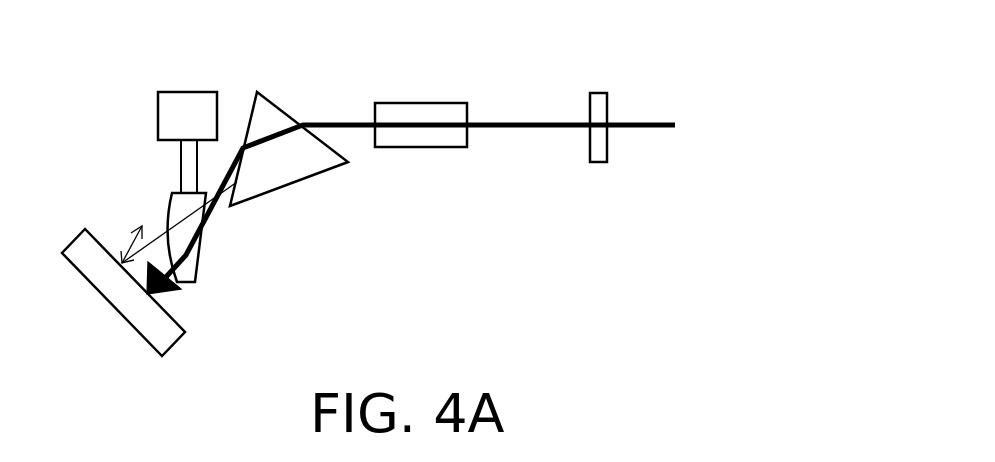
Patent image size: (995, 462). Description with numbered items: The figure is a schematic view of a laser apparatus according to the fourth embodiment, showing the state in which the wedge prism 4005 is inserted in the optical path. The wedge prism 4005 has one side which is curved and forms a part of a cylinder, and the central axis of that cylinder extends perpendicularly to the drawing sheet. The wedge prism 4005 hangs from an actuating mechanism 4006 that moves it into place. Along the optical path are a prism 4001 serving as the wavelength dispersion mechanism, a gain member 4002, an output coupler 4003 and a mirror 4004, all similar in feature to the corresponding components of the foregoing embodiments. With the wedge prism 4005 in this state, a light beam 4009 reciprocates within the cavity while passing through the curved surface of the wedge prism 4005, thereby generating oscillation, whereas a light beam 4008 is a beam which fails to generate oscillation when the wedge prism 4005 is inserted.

The prism 4001 is at (272, 178).
The gain member 4002 is at (420, 140).
The output coupler 4003 is at (597, 147).
The mirror 4004 is at (158, 335).
The wedge prism 4005 is at (182, 207).
The actuating mechanism 4006 is at (203, 105).
The light beam 4008 is at (128, 228).
The light beam 4009 is at (175, 287).